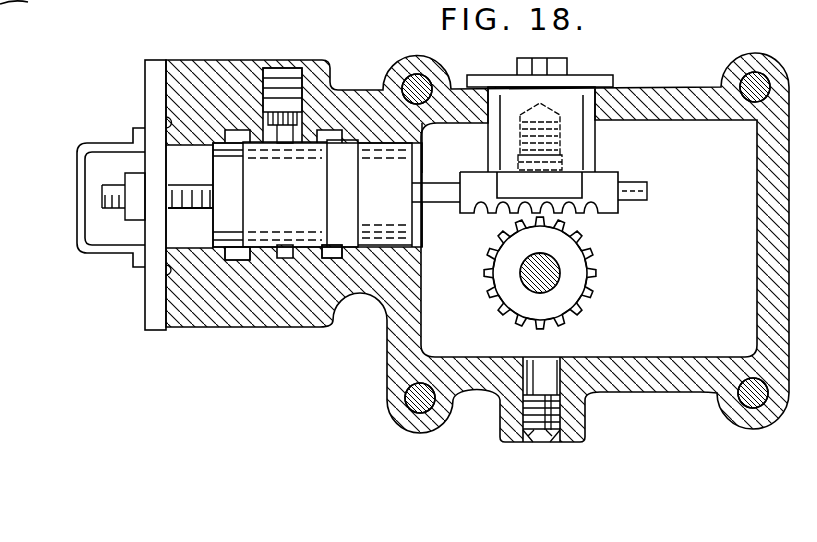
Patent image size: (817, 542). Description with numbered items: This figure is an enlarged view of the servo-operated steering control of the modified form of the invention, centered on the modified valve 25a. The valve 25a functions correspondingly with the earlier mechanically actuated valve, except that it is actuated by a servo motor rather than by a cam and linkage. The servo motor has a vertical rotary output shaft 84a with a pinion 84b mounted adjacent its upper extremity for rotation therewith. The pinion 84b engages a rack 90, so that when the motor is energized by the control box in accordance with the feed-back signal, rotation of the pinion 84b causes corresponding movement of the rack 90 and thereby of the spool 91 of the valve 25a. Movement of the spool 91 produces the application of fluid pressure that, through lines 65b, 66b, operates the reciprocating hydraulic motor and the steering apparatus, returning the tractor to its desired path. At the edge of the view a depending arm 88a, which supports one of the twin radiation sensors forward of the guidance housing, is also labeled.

The modified valve 25a is at (196, 60).
The spool 91 is at (280, 202).
The rack 90 is at (621, 178).
The rotary output shaft 84a is at (563, 262).
The pinion 84b is at (593, 296).
The line 65b is at (233, 260).
The line 66b is at (325, 258).
The depending arm 88a is at (47, 0).